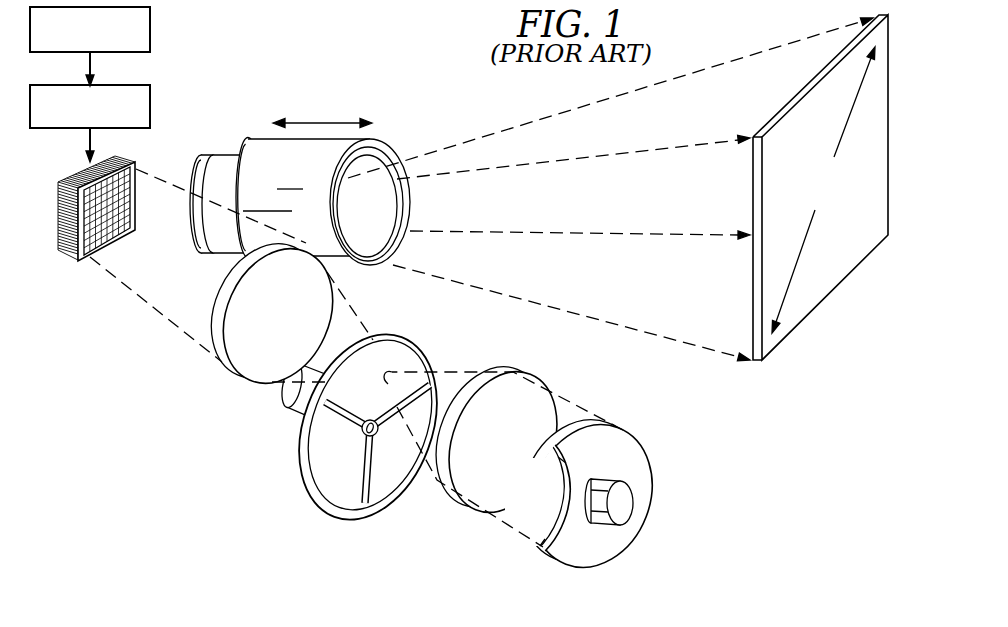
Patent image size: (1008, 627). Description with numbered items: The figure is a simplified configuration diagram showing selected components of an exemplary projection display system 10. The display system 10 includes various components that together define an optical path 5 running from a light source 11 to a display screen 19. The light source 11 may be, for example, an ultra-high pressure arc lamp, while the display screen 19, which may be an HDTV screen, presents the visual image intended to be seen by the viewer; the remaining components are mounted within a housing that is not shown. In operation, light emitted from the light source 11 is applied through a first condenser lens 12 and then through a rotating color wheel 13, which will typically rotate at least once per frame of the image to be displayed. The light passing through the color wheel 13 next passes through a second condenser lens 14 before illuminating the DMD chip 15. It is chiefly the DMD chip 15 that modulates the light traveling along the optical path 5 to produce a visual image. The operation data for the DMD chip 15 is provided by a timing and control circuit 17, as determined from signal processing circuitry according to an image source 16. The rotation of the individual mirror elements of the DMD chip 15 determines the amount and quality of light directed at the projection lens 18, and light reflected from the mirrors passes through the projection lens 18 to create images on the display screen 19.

The optical path 5 is at (213, 476).
The projection display system 10 is at (737, 457).
The light source 11 is at (607, 540).
The first condenser lens 12 is at (501, 496).
The color wheel 13 is at (328, 511).
The second condenser lens 14 is at (214, 337).
The DMD chip 15 is at (77, 263).
The image source 16 is at (150, 29).
The timing and control circuit 17 is at (150, 108).
The projection lens 18 is at (300, 192).
The display screen 19 is at (828, 283).